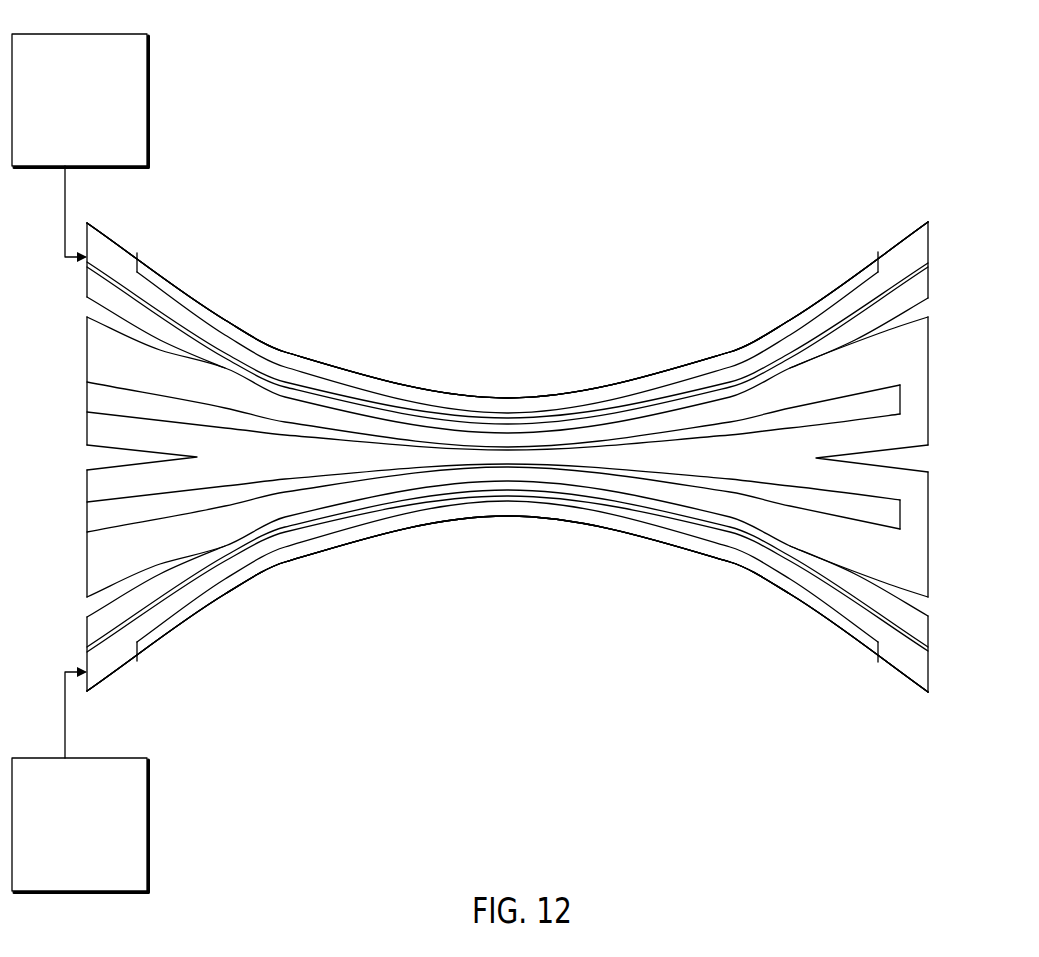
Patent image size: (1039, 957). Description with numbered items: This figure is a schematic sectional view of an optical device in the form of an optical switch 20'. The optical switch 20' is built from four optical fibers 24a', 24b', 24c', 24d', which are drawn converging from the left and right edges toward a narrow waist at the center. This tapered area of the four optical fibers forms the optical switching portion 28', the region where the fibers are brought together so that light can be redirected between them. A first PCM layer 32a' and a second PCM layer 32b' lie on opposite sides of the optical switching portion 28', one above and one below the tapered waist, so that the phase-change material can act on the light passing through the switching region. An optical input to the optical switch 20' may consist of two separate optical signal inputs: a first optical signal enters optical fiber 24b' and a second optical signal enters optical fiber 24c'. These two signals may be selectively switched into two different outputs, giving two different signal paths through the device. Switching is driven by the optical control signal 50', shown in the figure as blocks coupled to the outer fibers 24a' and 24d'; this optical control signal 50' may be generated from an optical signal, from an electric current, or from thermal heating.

The optical switch 20' is at (507, 431).
The optical fiber 24a' is at (507, 315).
The optical fiber 24b' is at (475, 383).
The optical fiber 24c' is at (478, 530).
The optical fiber 24d' is at (507, 602).
The optical switching portion 28' is at (507, 457).
The first PCM layer 32a' is at (507, 310).
The second PCM layer 32b' is at (507, 604).
The optical control signal 50' is at (109, 463).